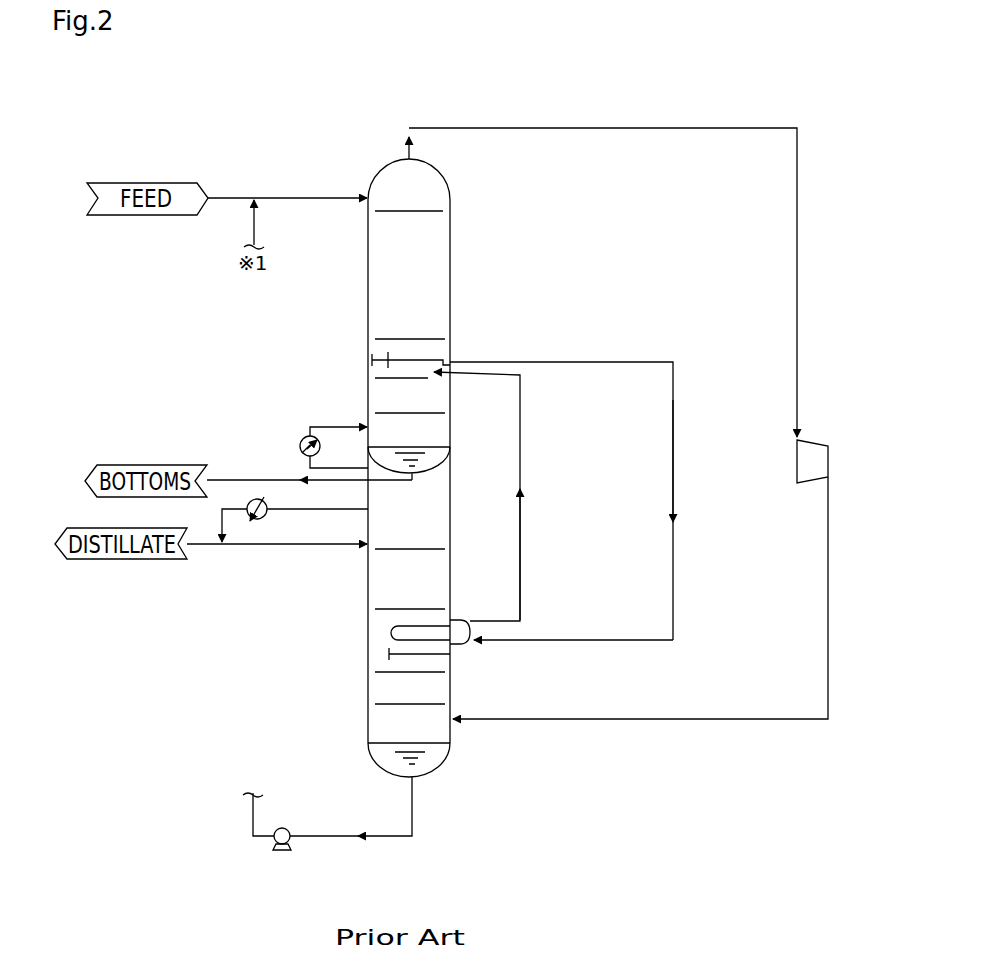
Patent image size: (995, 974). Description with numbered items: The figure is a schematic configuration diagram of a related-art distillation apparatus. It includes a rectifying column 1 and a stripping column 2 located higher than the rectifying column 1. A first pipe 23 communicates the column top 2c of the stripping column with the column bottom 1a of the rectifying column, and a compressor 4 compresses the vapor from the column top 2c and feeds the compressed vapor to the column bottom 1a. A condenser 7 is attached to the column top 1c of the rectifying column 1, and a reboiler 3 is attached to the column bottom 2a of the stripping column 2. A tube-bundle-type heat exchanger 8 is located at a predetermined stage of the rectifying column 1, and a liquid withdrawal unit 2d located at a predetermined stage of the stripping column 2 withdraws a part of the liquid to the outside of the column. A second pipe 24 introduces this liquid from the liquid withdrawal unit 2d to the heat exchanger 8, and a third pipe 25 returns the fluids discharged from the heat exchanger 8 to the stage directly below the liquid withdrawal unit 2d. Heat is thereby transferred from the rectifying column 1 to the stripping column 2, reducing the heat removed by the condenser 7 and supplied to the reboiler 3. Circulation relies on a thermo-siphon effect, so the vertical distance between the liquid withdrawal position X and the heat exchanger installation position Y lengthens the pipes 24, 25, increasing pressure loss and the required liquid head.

The rectifying column 1 is at (367, 623).
The column bottom of the rectifying column 1a is at (440, 731).
The column top of the rectifying column 1c is at (430, 509).
The stripping column 2 is at (367, 290).
The column bottom of the stripping column 2a is at (435, 434).
The column top of the stripping column 2c is at (424, 195).
The liquid withdrawal unit 2d is at (450, 350).
The reboiler 3 is at (303, 439).
The compressor 4 is at (814, 440).
The condenser 7 is at (269, 516).
The tube-bundle-type heat exchanger 8 is at (417, 623).
The first pipe 23 is at (670, 126).
The second pipe 24 is at (646, 361).
The third pipe 25 is at (522, 516).
The liquid withdrawal position X is at (455, 358).
The heat exchanger installation position Y is at (473, 638).